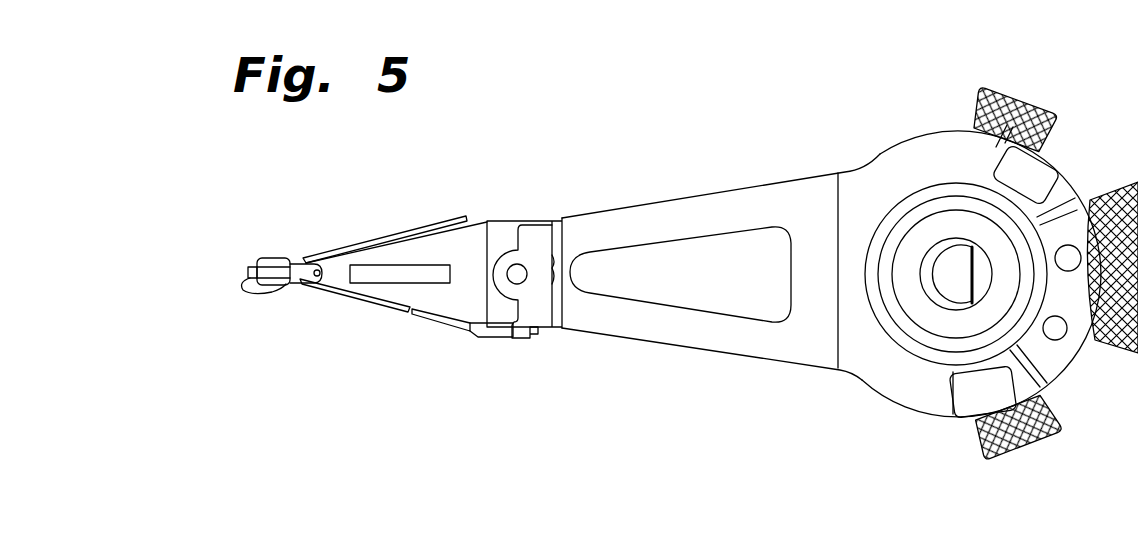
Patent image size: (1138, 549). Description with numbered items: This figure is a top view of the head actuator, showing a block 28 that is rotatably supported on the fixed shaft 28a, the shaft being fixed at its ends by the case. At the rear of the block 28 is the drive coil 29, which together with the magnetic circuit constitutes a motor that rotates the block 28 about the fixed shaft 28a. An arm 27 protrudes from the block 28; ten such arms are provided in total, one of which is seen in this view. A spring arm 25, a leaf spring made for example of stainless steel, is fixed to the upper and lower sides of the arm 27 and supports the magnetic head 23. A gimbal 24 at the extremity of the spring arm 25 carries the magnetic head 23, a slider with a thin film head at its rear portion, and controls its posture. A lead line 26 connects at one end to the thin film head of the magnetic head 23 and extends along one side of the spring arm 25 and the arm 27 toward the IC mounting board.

The magnetic head 23 is at (273, 260).
The gimbal 24 is at (302, 250).
The spring arm 25 is at (444, 238).
The lead line 26 is at (373, 303).
The arm 27 is at (690, 196).
The block 28 is at (925, 133).
The fixed shaft 28a is at (945, 287).
The drive coil 29 is at (1040, 96).